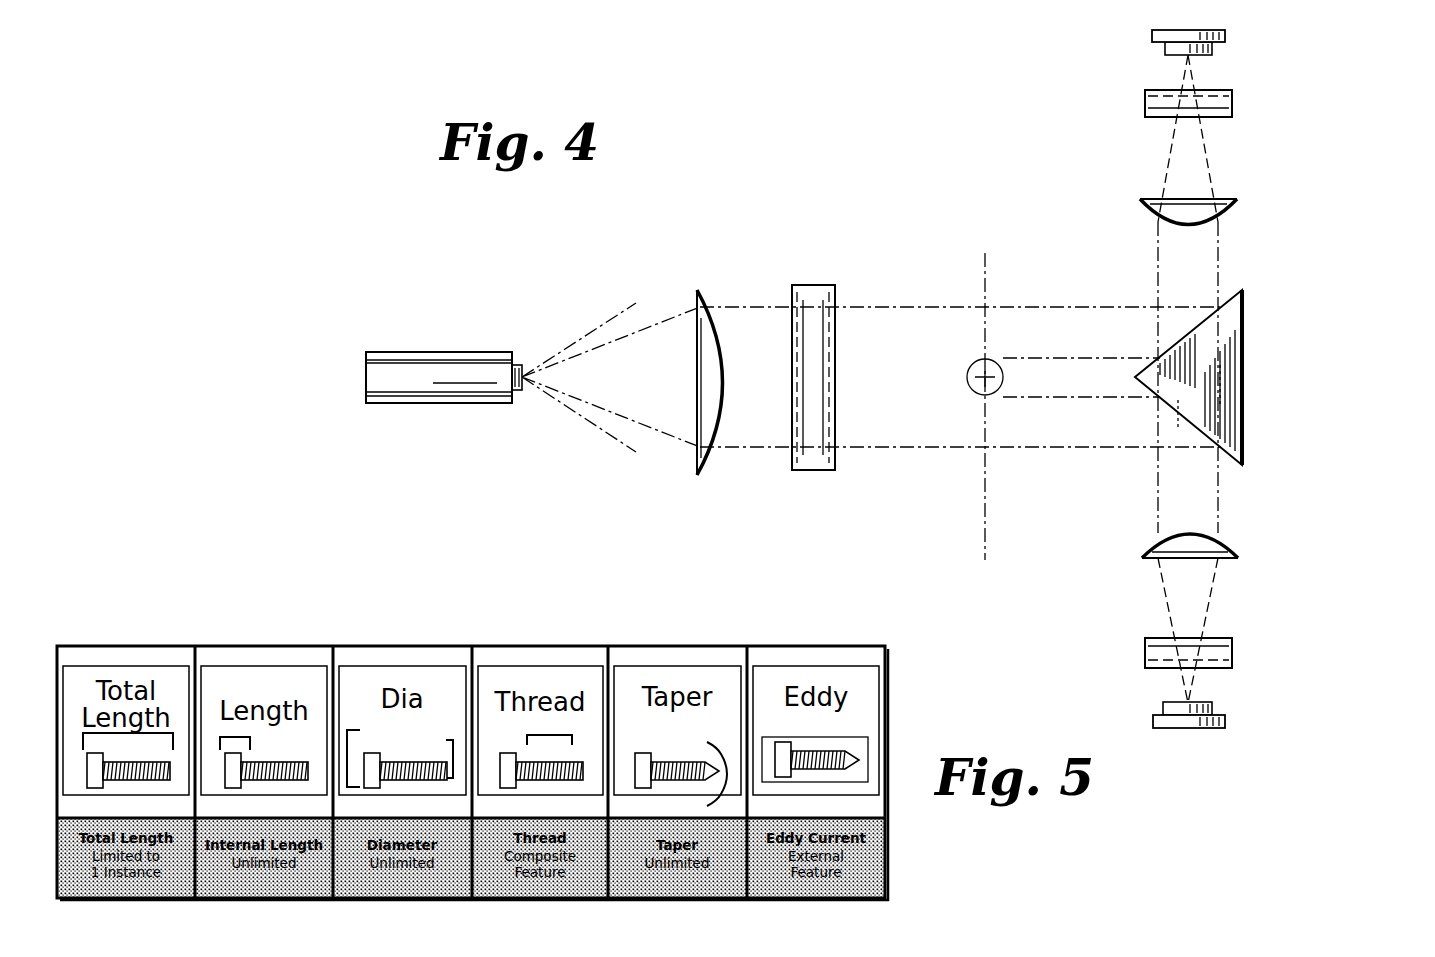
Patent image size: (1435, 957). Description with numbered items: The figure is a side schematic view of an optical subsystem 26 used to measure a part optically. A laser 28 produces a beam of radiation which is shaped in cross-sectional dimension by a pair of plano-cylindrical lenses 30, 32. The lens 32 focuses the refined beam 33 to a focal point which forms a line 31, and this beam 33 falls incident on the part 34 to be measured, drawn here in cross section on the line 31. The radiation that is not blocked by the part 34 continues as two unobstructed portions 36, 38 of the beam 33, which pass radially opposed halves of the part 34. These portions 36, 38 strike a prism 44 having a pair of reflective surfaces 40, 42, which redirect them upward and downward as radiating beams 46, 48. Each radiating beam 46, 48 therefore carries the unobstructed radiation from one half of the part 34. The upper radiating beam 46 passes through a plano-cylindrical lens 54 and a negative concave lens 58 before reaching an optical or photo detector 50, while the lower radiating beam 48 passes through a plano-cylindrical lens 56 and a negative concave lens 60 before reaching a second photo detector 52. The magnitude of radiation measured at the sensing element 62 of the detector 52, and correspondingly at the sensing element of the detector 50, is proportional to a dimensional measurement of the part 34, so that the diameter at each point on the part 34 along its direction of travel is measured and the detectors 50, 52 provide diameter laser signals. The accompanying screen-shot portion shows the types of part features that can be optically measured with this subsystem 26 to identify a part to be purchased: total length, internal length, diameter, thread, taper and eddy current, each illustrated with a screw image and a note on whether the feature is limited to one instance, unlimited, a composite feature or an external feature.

The optical subsystem 26 is at (1368, 117).
The laser 28 is at (441, 352).
The plano-cylindrical lens 30 is at (718, 290).
The line 31 is at (985, 270).
The plano-cylindrical lens 32 is at (813, 470).
The beam 33 is at (918, 390).
The part 34 is at (972, 363).
The unobstructed portion of the beam 36 is at (1088, 349).
The unobstructed portion of the beam 38 is at (1088, 439).
The reflective surface 40 is at (1192, 322).
The reflective surface 42 is at (1197, 433).
The prism 44 is at (1243, 377).
The radiating beam 46 is at (1218, 253).
The radiating beam 48 is at (1218, 525).
The photo detector 50 is at (1226, 37).
The photo detector 52 is at (1225, 722).
The plano-cylindrical lens 54 is at (1232, 100).
The plano-cylindrical lens 56 is at (1232, 652).
The negative concave lens 58 is at (1146, 200).
The negative concave lens 60 is at (1165, 48).
The sensing element 62 is at (1212, 708).